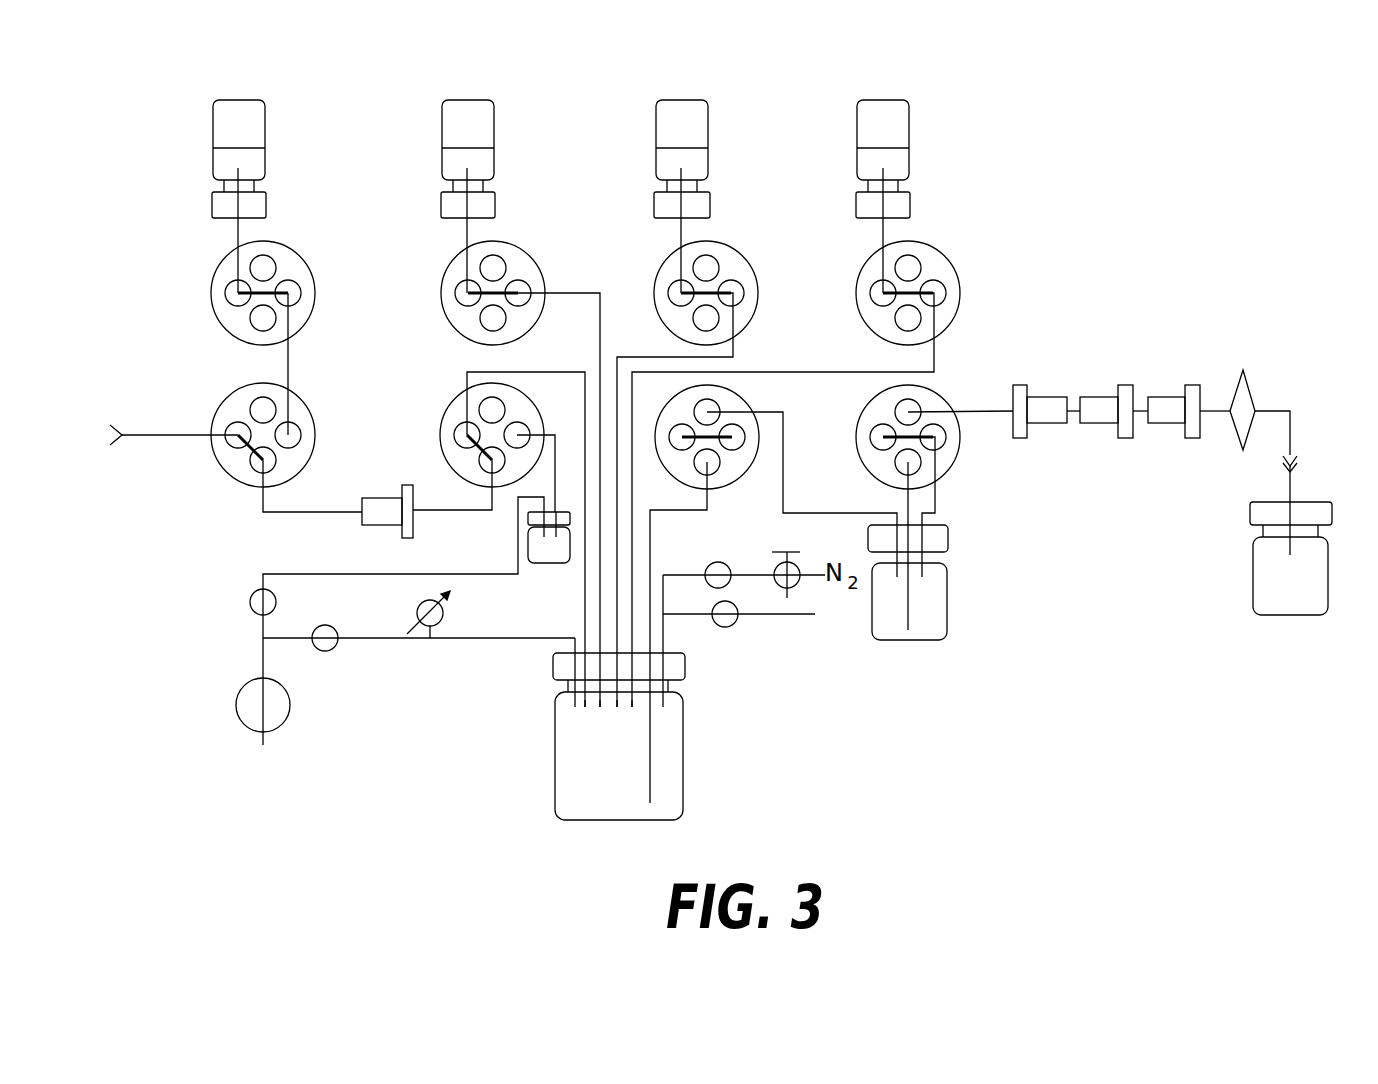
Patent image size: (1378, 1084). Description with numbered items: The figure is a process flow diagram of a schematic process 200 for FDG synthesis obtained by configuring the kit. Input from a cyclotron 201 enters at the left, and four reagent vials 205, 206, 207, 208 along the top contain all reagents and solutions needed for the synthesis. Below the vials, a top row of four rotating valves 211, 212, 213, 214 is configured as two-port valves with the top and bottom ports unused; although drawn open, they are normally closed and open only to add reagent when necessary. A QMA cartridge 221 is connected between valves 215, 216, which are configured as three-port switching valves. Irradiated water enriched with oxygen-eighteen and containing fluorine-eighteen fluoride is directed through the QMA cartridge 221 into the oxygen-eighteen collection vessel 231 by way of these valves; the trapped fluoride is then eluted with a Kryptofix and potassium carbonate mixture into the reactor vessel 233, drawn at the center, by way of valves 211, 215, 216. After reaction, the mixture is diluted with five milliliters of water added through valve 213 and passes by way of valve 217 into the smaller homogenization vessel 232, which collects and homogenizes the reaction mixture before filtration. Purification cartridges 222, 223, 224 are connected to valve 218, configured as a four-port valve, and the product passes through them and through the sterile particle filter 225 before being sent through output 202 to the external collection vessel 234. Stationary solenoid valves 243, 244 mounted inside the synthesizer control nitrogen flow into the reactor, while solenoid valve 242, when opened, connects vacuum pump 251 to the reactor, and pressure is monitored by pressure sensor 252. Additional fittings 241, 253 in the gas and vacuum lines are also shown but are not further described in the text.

The schematic process 200 is at (822, 705).
The input from a cyclotron 201 is at (147, 434).
The output 202 is at (1320, 474).
The reagent vial 205 is at (239, 196).
The reagent vial 206 is at (468, 196).
The reagent vial 207 is at (682, 196).
The reagent vial 208 is at (883, 196).
The rotating valve 211 is at (224, 272).
The rotating valve 212 is at (458, 278).
The rotating valve 213 is at (665, 275).
The rotating valve 214 is at (870, 278).
The valve 215 is at (232, 415).
The valve 216 is at (460, 420).
The valve 217 is at (722, 473).
The valve 218 is at (876, 423).
The QMA cartridge 221 is at (385, 505).
The purification cartridge 222 is at (1051, 398).
The purification cartridge 223 is at (1097, 405).
The purification cartridge 224 is at (1166, 400).
The sterile filter 225 is at (1245, 383).
The O-18 collection vessel 231 is at (535, 548).
The homogenization vessel 232 is at (928, 611).
The reactor vessel 233 is at (632, 778).
The external collection vessel 234 is at (1271, 575).
The fitting 241 is at (258, 602).
The solenoid valve 242 is at (338, 648).
The stationary solenoid valve 243 is at (730, 620).
The stationary solenoid valve 244 is at (722, 568).
The vacuum pump 251 is at (245, 710).
The pressure sensor 252 is at (443, 632).
The gas valve 253 is at (793, 570).